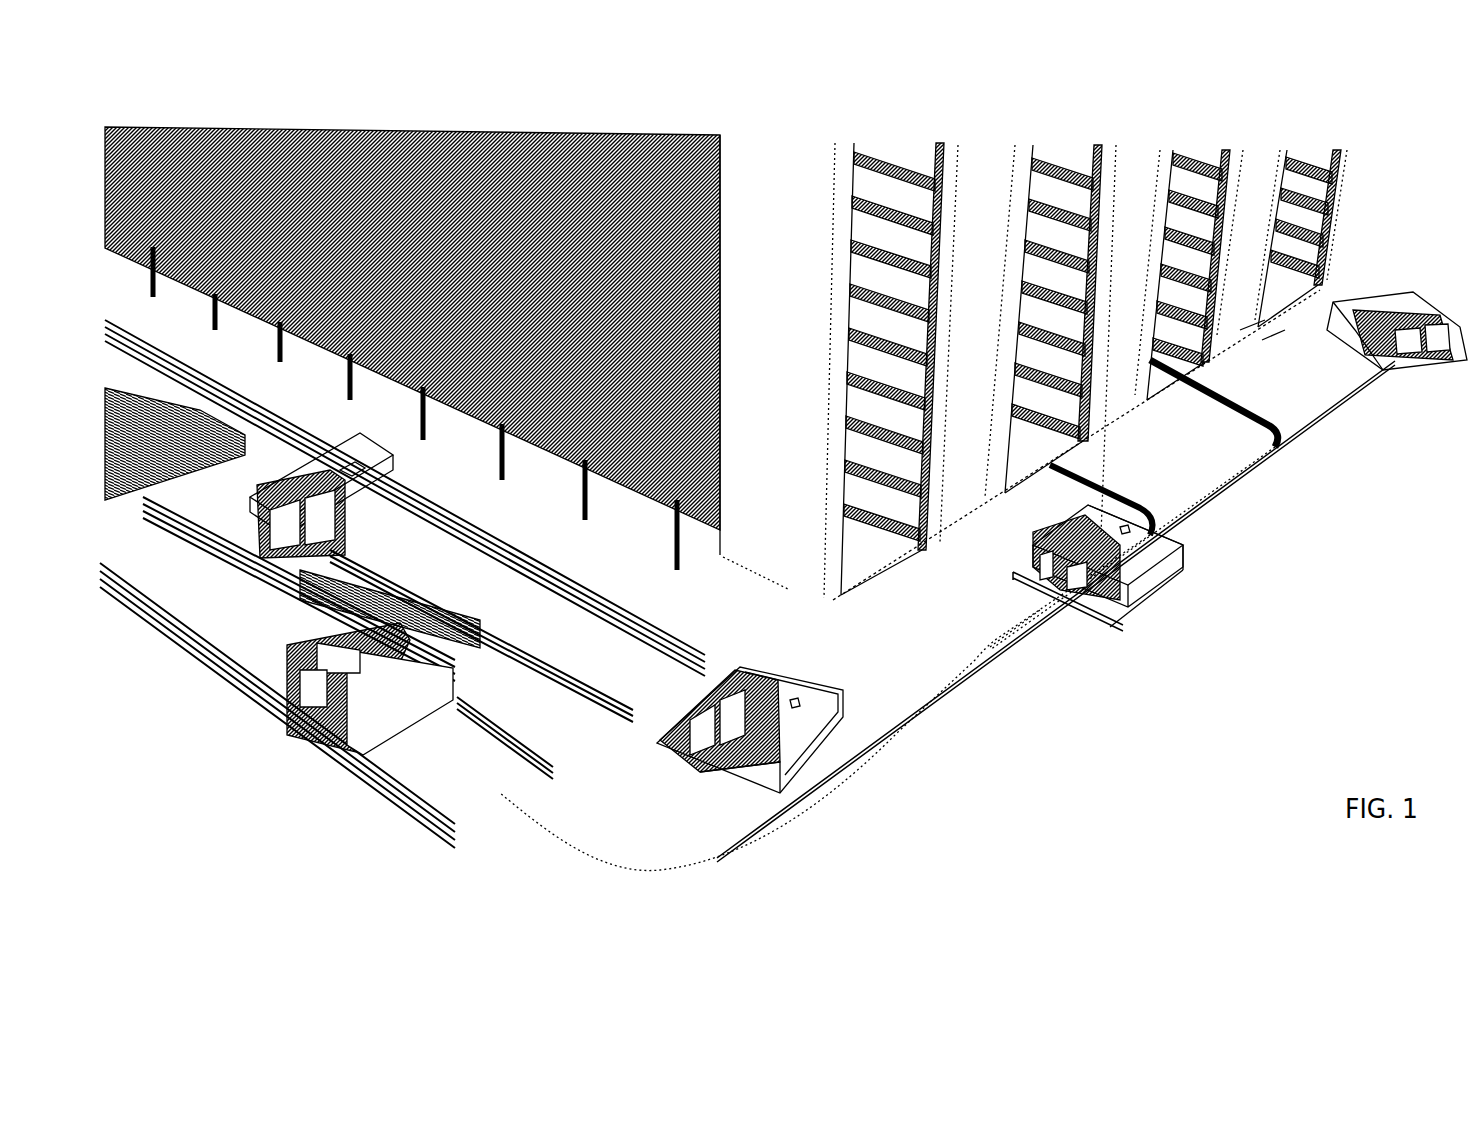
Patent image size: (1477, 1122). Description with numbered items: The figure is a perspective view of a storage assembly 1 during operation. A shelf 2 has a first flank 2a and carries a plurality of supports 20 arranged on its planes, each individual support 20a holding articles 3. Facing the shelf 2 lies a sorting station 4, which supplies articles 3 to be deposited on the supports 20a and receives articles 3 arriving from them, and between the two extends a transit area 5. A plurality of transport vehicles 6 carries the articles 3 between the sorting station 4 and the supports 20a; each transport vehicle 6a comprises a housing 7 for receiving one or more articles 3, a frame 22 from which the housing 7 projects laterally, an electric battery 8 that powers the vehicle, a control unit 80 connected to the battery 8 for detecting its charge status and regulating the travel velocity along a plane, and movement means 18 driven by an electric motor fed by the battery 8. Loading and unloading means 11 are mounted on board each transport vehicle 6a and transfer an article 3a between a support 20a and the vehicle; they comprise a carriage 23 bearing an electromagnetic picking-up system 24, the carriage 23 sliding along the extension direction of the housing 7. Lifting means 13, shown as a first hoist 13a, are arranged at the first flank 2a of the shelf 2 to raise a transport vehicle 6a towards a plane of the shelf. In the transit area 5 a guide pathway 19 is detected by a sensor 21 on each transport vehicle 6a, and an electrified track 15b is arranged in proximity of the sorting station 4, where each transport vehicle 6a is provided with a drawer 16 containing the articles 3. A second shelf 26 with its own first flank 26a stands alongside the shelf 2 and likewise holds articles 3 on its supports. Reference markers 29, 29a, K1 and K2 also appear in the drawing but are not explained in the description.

The storage assembly 1 is at (1067, 709).
The shelf 2 is at (1359, 240).
The first flank 2a is at (1299, 330).
The articles 3 is at (368, 522).
The article 3a is at (300, 520).
The sorting station 4 is at (271, 748).
The transit area 5 is at (934, 761).
The plurality of transport vehicles 6 is at (1178, 601).
The transport vehicle 6a is at (1180, 557).
The housing 7 is at (1127, 617).
The electric battery 8 is at (1180, 573).
The loading and unloading means 11 is at (1159, 616).
The lifting means 13 is at (1278, 450).
The first hoist 13a is at (1290, 440).
The electrified track 15b is at (547, 577).
The drawer 16 is at (265, 550).
The movement means 18 is at (745, 797).
The guide pathway 19 is at (985, 668).
The plurality of supports 20 is at (1285, 246).
The support 20a is at (1343, 168).
The sensor 21 is at (815, 757).
The frame 22 is at (807, 697).
The carriage 23 is at (335, 750).
The electromagnetic picking-up system 24 is at (299, 710).
The second shelf 26 is at (1287, 335).
The first flank 26a is at (1267, 334).
The rack 29 is at (645, 533).
The rack post 29a is at (653, 498).
The control unit 80 is at (1370, 373).
The curve section K1 is at (1005, 598).
The curve section K2 is at (1076, 638).